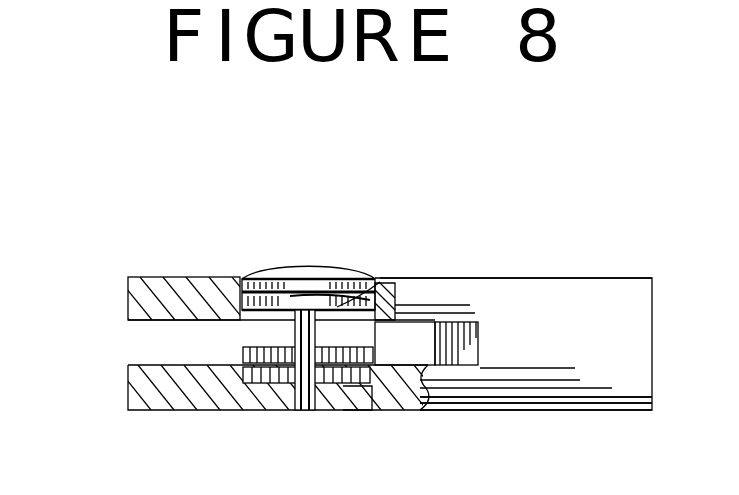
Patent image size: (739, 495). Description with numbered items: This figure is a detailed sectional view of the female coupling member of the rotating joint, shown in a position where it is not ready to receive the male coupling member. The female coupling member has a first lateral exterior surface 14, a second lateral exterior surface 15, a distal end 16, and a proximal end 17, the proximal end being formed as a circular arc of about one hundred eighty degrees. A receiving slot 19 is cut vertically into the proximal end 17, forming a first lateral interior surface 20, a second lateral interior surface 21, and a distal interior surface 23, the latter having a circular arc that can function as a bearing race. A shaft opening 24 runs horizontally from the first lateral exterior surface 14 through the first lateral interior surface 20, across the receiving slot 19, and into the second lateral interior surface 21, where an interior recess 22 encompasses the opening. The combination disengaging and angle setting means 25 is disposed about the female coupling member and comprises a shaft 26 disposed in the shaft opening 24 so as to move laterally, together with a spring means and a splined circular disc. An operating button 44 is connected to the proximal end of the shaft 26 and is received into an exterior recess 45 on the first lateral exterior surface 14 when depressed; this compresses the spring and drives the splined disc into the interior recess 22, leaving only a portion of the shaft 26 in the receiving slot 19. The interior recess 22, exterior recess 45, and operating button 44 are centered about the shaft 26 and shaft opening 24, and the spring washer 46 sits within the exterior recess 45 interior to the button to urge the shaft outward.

The first lateral exterior surface 14 is at (512, 278).
The second lateral exterior surface 15 is at (585, 412).
The distal end 16 is at (652, 338).
The proximal end 17 is at (128, 297).
The receiving slot 19 is at (128, 344).
The first lateral interior surface 20 is at (224, 324).
The second lateral interior surface 21 is at (405, 345).
The interior recess 22 is at (353, 413).
The distal interior surface 23 is at (478, 340).
The shaft opening 24 is at (316, 413).
The combination disengaging and angle setting means 25 is at (372, 147).
The shaft 26 is at (287, 337).
The operating button 44 is at (290, 270).
The exterior recess 45 is at (383, 283).
The spring washer 46 is at (377, 307).